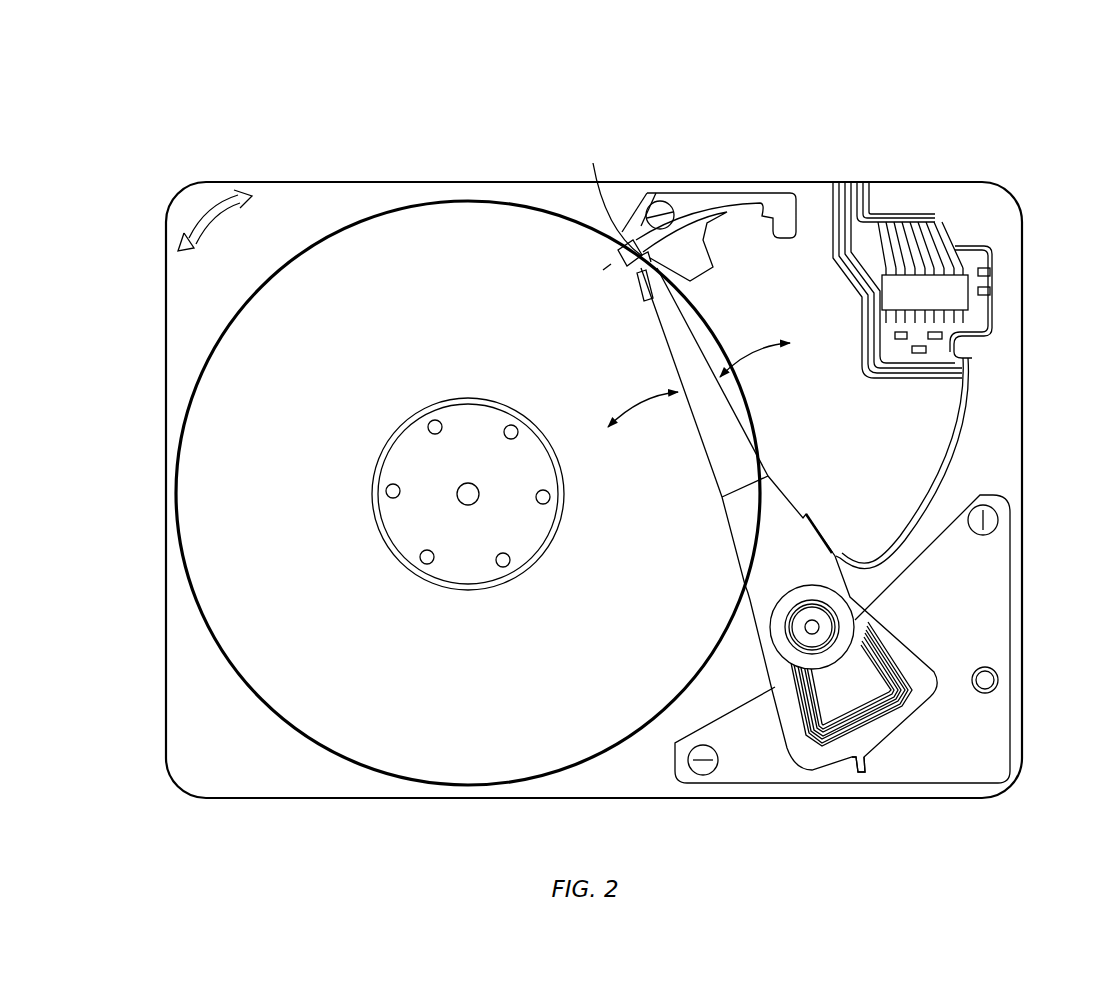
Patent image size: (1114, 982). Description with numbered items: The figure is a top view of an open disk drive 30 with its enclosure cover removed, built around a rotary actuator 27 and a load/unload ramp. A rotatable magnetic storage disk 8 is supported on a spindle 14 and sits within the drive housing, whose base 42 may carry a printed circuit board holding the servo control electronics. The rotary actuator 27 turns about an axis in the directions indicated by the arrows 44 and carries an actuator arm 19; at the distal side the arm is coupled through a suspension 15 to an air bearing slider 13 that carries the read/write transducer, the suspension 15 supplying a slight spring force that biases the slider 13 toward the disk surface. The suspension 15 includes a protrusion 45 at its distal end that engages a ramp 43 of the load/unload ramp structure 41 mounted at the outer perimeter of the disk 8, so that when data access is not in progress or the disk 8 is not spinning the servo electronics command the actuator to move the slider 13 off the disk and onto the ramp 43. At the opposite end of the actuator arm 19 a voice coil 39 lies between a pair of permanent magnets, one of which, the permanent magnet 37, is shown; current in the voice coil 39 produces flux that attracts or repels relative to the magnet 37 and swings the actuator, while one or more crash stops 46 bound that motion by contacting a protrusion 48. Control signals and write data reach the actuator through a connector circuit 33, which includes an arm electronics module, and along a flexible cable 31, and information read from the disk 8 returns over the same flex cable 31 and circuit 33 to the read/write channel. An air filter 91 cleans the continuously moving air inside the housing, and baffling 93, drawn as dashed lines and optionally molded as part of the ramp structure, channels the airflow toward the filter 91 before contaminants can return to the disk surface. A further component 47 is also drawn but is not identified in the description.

The disk drive 30 is at (522, 106).
The load/unload ramp structure 41 is at (735, 167).
The baffling 93 is at (607, 195).
The protrusion 45 is at (630, 232).
The ramp 43 is at (615, 257).
The slider 13 is at (640, 293).
The latch 47 is at (710, 266).
The arrows 44 is at (699, 374).
The suspension 15 is at (737, 457).
The spindle 14 is at (544, 476).
The flexible cable 31 is at (941, 484).
The actuator arm 19 is at (748, 503).
The rotary actuator 27 is at (816, 628).
The crash stop 46 is at (983, 667).
The voice coil 39 is at (840, 722).
The permanent magnet 37 is at (955, 753).
The base 42 is at (245, 765).
The magnetic disk 8 is at (533, 660).
The protrusion 48 is at (864, 775).
The connector circuit 33 is at (1035, 182).
The filter 91 is at (214, 220).